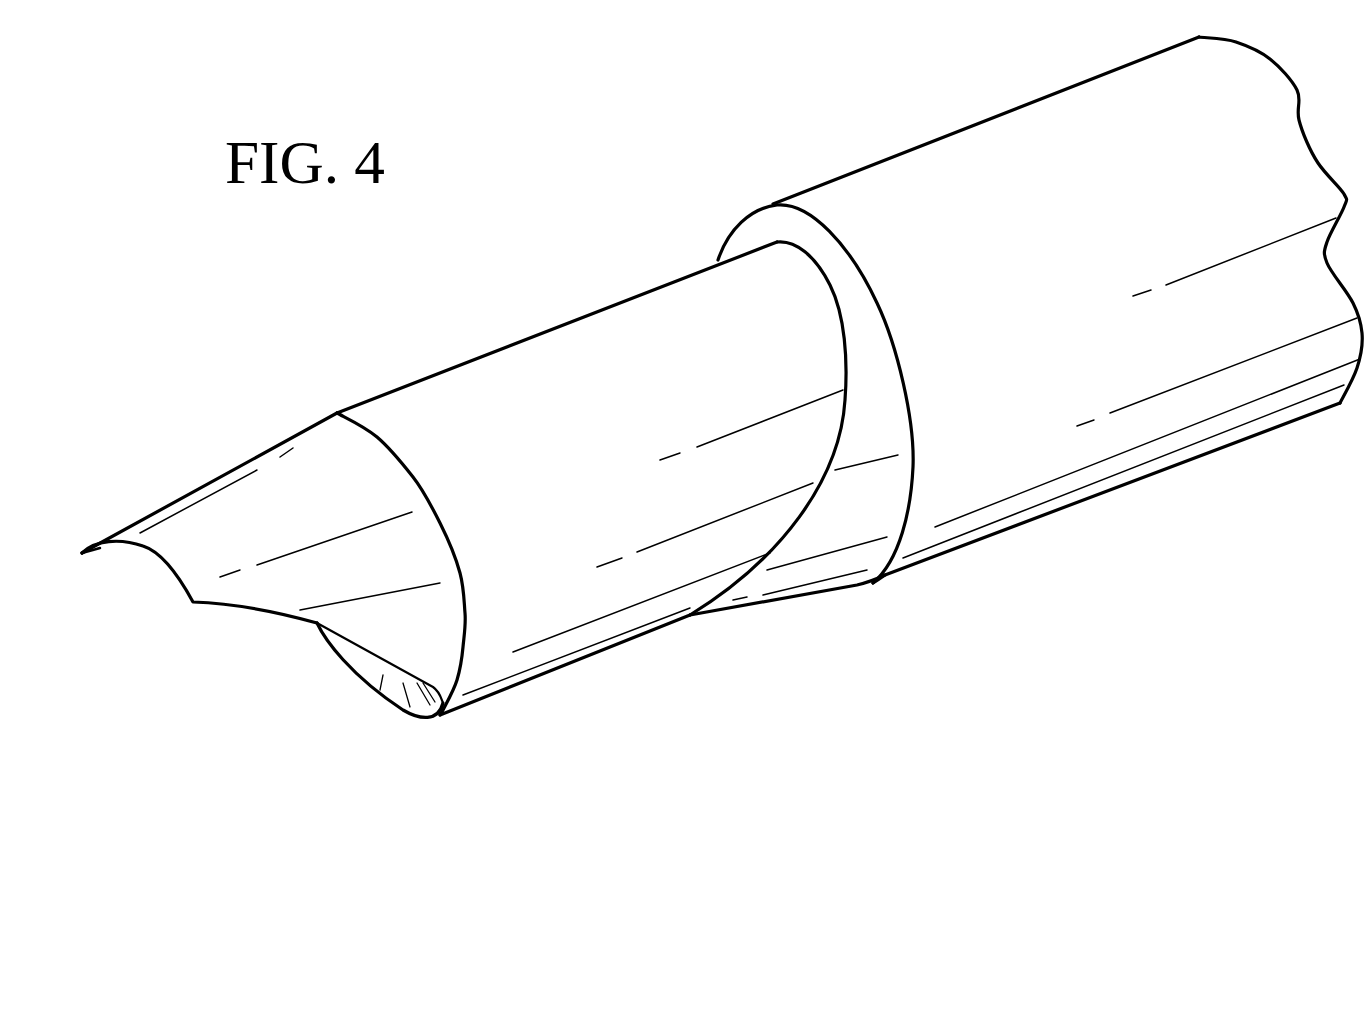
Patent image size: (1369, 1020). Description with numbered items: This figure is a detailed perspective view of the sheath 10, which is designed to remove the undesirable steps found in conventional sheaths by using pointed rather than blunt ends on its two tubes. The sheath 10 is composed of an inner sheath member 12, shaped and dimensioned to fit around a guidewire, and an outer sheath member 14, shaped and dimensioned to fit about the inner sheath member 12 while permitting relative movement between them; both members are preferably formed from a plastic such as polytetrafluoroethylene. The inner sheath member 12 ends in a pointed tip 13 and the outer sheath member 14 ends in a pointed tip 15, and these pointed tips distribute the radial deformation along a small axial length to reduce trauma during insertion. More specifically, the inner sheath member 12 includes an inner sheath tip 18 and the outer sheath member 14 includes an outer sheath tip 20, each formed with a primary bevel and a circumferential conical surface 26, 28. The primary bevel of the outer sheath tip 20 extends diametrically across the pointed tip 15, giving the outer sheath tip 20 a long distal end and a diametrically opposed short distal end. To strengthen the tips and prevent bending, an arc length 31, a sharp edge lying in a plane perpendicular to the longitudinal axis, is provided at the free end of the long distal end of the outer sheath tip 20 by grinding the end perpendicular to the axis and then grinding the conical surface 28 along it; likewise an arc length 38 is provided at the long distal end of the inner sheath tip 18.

The sheath 10 is at (647, 148).
The inner sheath member 12 is at (472, 350).
The pointed tip of the inner sheath member 13 is at (193, 485).
The outer sheath member 14 is at (898, 143).
The pointed tip of the outer sheath member 15 is at (715, 613).
The inner sheath tip 18 is at (230, 457).
The outer sheath tip 20 is at (792, 610).
The circumferential conical surface 26 is at (303, 433).
The circumferential conical surface 28 is at (827, 565).
The arc length 31 is at (685, 620).
The arc length 38 is at (112, 545).